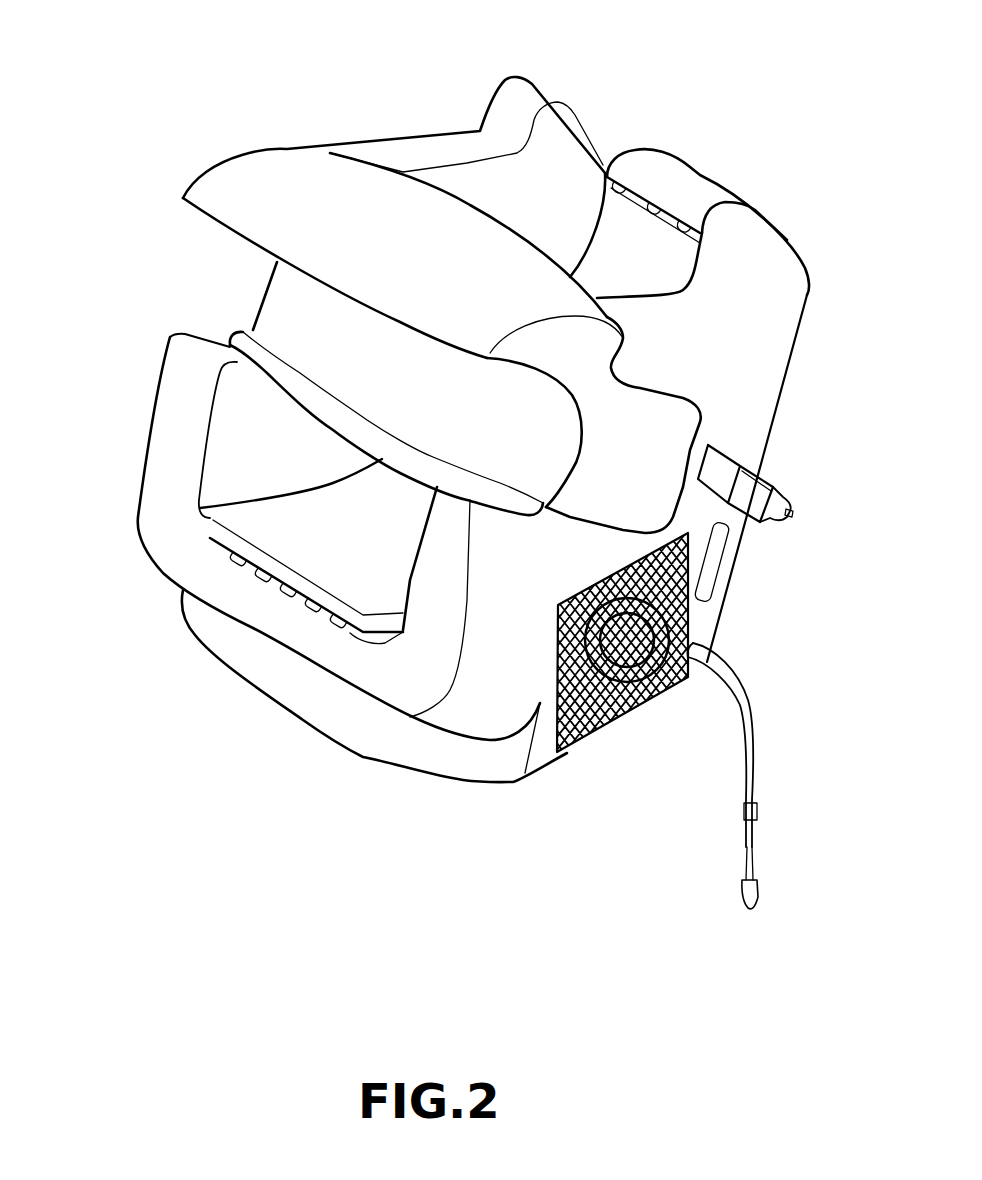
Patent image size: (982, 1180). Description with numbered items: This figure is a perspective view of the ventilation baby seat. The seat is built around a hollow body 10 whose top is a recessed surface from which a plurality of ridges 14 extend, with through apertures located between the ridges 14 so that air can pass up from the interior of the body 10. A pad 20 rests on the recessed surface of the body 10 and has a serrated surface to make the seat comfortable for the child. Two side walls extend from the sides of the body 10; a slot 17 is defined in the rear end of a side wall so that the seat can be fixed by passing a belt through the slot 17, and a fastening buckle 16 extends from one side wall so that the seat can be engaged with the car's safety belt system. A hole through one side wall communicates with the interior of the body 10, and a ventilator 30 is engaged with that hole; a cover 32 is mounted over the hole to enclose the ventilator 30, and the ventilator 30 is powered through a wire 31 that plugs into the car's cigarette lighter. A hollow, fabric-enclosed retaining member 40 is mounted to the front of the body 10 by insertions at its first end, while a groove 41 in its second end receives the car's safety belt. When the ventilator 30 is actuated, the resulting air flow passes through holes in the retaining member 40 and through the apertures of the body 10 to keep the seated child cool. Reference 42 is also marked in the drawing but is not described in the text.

The hollow body 10 is at (328, 770).
The ridges 14 is at (227, 556).
The fastening buckle 16 is at (753, 487).
The slot 17 is at (717, 547).
The pad 20 is at (210, 525).
The ventilator 30 is at (650, 716).
The wire 31 is at (752, 767).
The cover 32 is at (559, 752).
The retaining member 40 is at (240, 167).
The groove 41 is at (280, 317).
The side lobe 42 is at (680, 415).